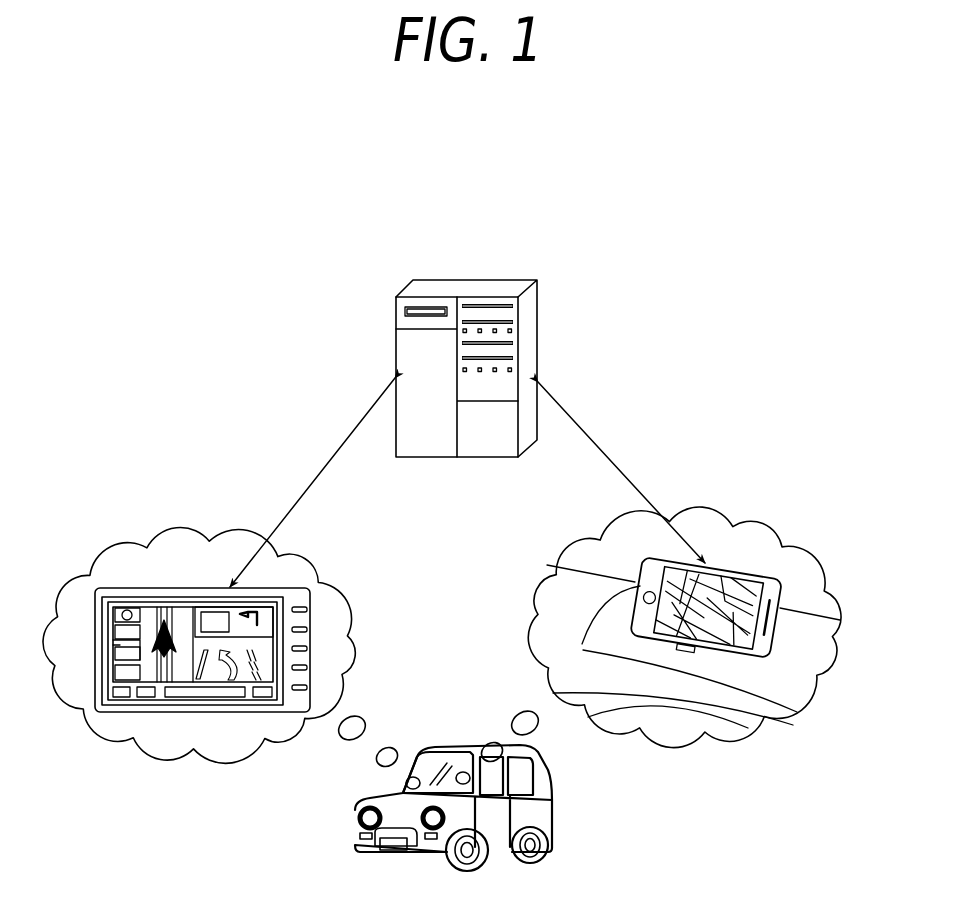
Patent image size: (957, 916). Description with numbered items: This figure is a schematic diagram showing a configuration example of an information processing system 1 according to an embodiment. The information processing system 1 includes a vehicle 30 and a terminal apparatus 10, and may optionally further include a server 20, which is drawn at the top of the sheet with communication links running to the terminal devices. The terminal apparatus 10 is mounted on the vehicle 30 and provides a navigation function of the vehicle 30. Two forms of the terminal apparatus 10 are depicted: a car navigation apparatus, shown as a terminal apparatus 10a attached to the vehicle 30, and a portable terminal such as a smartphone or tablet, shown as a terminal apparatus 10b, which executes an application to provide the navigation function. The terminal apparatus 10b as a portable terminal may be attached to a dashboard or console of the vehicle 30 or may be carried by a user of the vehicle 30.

The information processing system 1 is at (279, 158).
The server 20 is at (468, 278).
The terminal apparatus 10 is at (442, 638).
The terminal apparatus 10a is at (125, 588).
The terminal apparatus 10b is at (765, 577).
The vehicle 30 is at (355, 828).